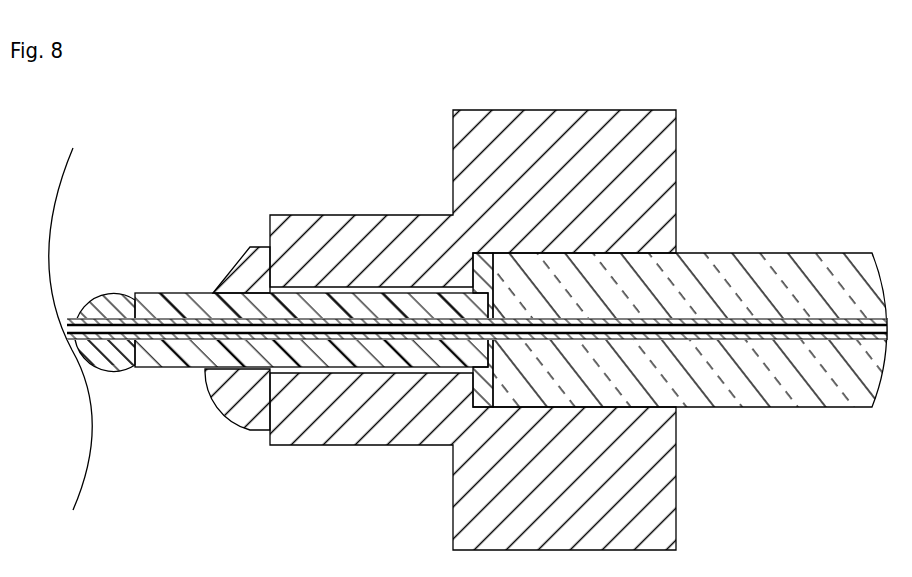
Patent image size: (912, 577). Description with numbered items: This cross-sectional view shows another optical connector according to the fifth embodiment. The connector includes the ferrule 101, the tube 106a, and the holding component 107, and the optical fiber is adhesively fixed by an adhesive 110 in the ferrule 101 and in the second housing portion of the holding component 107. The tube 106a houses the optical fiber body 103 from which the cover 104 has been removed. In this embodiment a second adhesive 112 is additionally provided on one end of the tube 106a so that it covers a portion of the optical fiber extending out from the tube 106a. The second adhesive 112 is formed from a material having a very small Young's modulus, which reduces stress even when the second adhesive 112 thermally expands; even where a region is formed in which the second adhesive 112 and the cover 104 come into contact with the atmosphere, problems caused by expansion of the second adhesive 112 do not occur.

The ferrule 101 is at (770, 253).
The optical fiber body 103 is at (297, 335).
The cover 104 is at (118, 346).
The tube 106a is at (170, 297).
The holding component 107 is at (676, 153).
The adhesive 110 is at (457, 252).
The second adhesive 112 is at (97, 298).